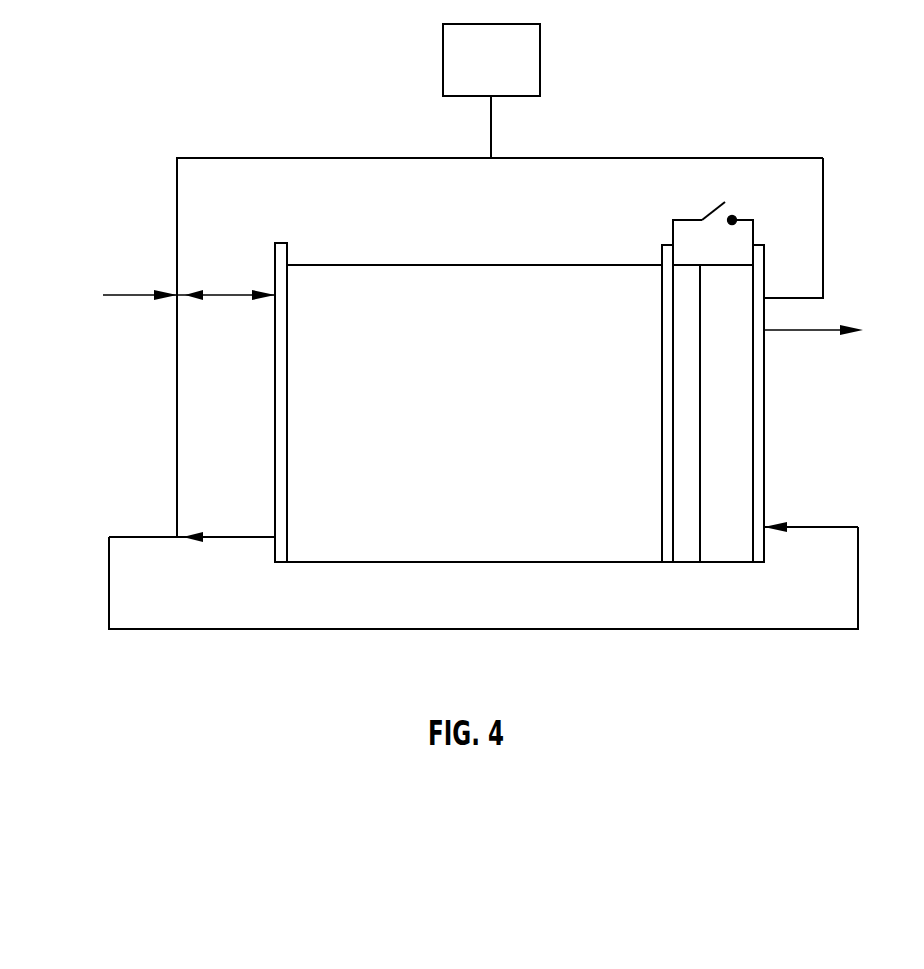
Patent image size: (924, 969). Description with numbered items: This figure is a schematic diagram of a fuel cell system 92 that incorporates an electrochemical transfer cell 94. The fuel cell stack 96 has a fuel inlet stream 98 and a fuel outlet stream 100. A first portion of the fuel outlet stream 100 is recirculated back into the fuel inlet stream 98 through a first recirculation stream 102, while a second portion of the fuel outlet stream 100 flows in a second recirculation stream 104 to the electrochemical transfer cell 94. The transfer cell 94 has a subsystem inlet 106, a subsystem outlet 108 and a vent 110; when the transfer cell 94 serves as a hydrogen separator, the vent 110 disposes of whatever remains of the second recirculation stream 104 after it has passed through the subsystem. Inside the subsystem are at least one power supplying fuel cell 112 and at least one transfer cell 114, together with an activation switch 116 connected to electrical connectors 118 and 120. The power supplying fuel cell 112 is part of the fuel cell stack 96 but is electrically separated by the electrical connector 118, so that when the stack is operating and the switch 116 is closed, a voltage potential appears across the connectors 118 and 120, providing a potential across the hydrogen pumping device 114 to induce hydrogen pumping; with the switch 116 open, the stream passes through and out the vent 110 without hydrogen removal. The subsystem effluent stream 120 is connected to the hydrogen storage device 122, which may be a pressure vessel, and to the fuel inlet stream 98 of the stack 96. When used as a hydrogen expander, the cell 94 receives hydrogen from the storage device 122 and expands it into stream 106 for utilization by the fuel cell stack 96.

The fuel cell system 92 is at (640, 702).
The electrochemical transfer cell 94 is at (788, 435).
The fuel cell stack 96 is at (482, 419).
The fuel inlet stream 98 is at (224, 295).
The fuel outlet stream 100 is at (219, 537).
The first recirculation stream 102 is at (177, 388).
The second recirculation stream 104 is at (177, 629).
The subsystem inlet 106 is at (810, 511).
The subsystem outlet 108 is at (793, 228).
The vent 110 is at (813, 344).
The power supplying fuel cell 112 is at (687, 308).
The transfer cell 114 is at (715, 358).
The activation switch 116 is at (708, 206).
The electrical connector 118 is at (667, 502).
The electrical connector / subsystem effluent stream 120 is at (823, 212).
The hydrogen storage device 122 is at (511, 73).